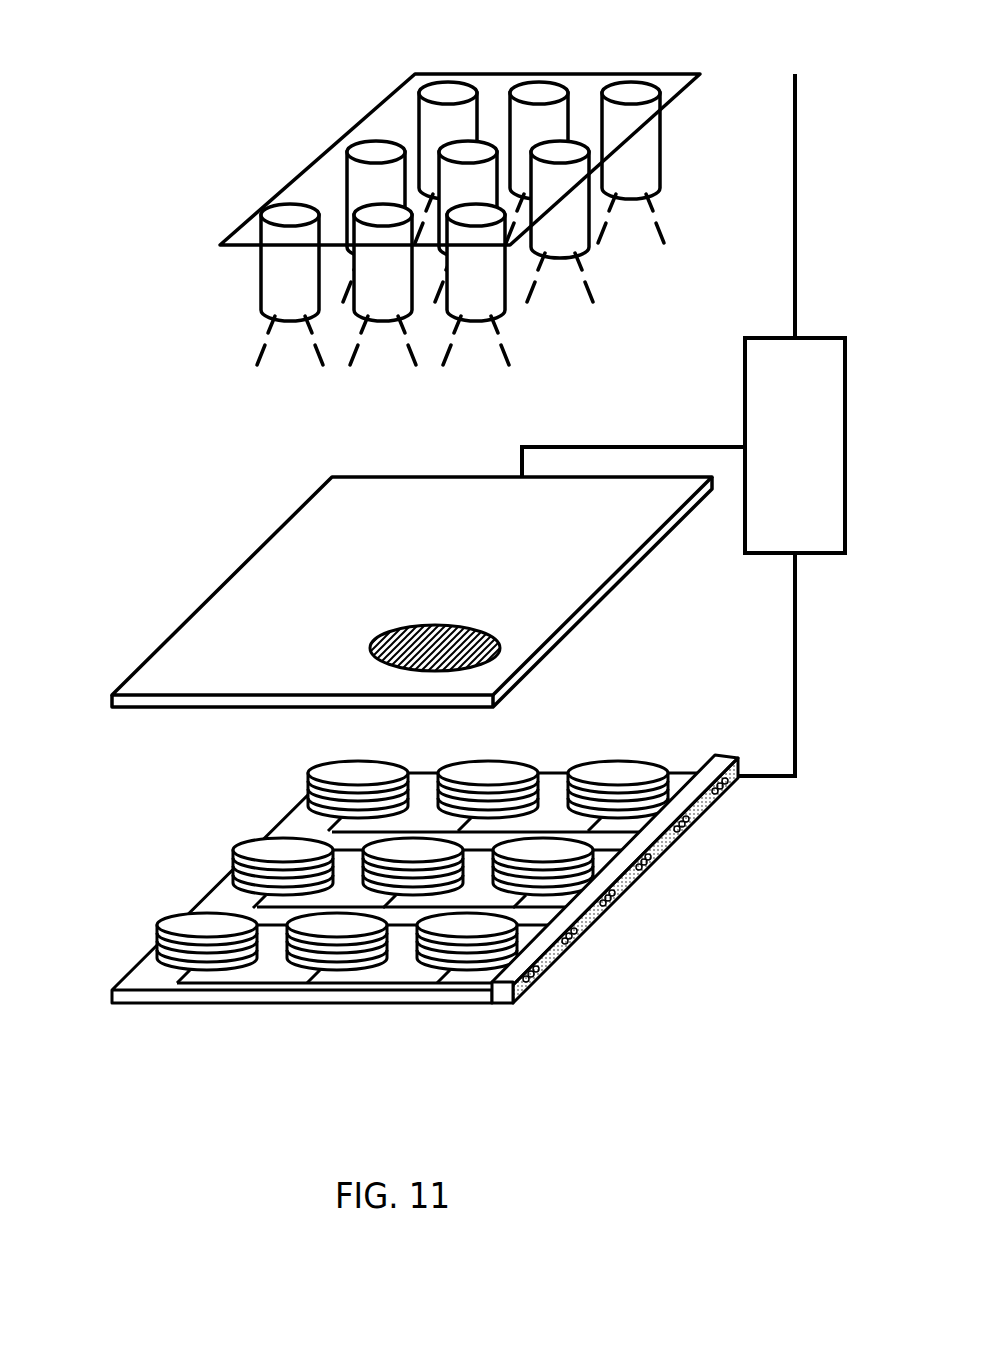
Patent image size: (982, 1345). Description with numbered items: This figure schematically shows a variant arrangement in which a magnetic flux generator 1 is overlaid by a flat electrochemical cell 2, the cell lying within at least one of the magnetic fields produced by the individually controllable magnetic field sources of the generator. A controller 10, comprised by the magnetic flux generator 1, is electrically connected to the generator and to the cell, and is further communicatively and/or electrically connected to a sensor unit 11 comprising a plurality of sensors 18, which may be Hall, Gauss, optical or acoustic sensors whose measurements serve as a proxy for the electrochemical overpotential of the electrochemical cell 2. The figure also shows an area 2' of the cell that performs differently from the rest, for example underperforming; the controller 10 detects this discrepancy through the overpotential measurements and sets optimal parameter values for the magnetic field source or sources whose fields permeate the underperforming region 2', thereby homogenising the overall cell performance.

The magnetic flux generator 1 is at (133, 861).
The electrochemical cell 2 is at (412, 607).
The area on the electrochemical cell 2' is at (487, 681).
The controller 10 is at (805, 459).
The sensor unit 11 is at (390, 124).
The sensors 18 is at (386, 271).